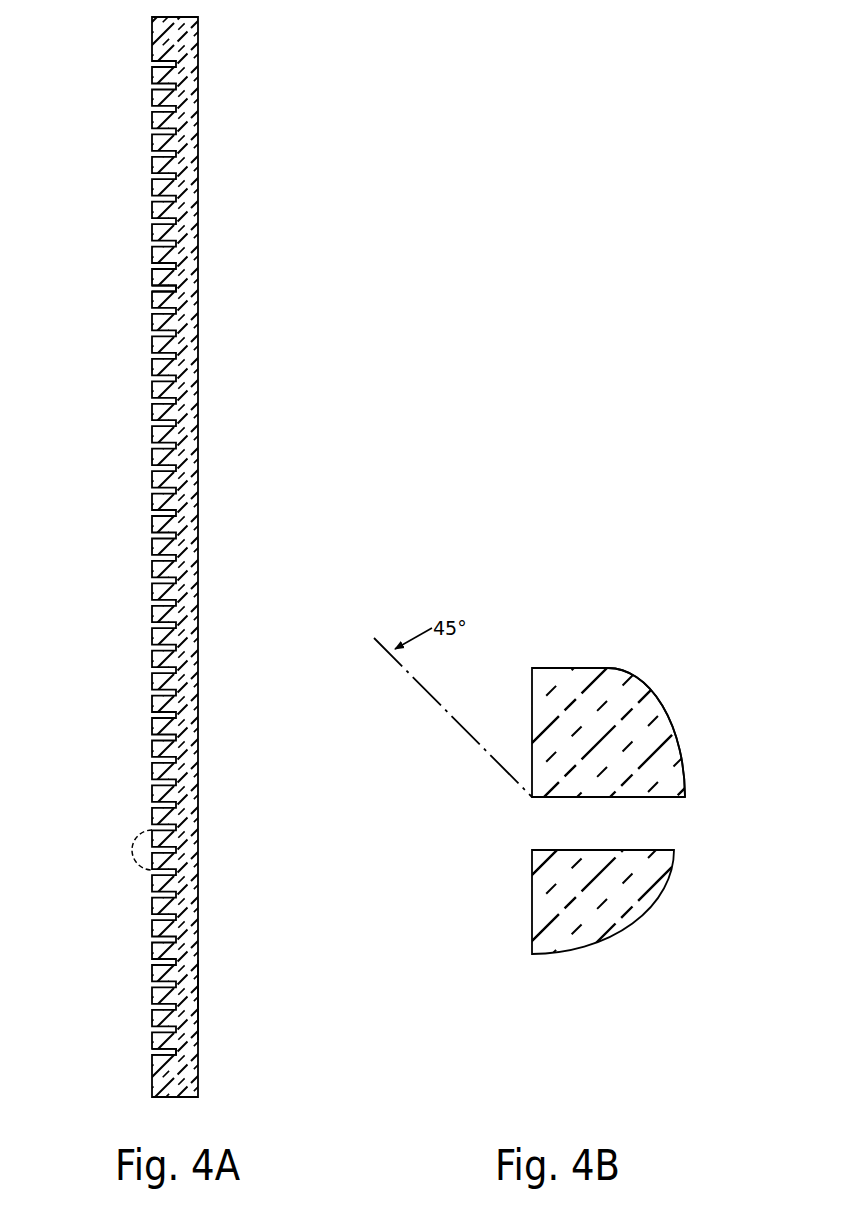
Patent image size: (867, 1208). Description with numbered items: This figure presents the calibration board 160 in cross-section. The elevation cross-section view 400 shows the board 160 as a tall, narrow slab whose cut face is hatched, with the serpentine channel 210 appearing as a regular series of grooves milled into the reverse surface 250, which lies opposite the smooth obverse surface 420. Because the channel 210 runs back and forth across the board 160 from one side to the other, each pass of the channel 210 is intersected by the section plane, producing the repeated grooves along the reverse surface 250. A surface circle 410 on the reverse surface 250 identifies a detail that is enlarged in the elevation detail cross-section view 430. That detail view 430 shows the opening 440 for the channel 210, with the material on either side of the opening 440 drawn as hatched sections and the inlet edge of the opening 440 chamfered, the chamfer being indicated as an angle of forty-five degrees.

In FIG. 4A, the board 160 is at (200, 432).
In FIG. 4A, the serpentine channel 210 is at (148, 288).
In FIG. 4A, the reverse surface 250 is at (150, 1067).
In FIG. 4A, the elevation cross-section view 400 is at (353, 144).
In FIG. 4A, the surface circle 410 is at (142, 830).
In FIG. 4B, the surface circle 410 is at (645, 697).
In FIG. 4A, the obverse surface 420 is at (201, 1003).
In FIG. 4B, the elevation detail cross-section view 430 is at (598, 504).
In FIG. 4B, the opening 440 is at (530, 822).